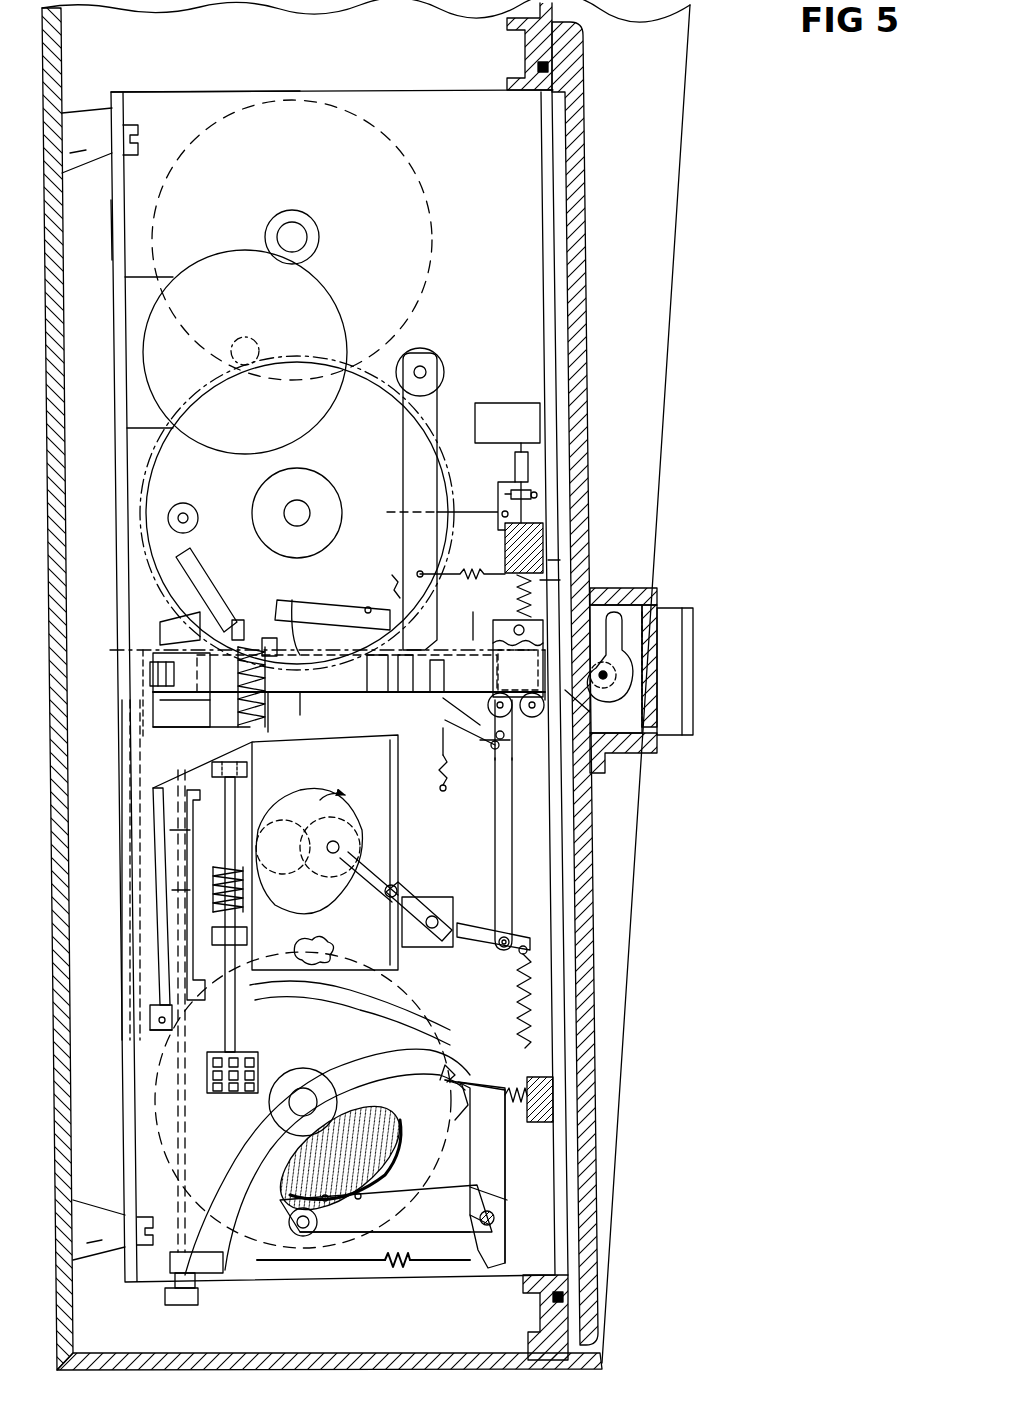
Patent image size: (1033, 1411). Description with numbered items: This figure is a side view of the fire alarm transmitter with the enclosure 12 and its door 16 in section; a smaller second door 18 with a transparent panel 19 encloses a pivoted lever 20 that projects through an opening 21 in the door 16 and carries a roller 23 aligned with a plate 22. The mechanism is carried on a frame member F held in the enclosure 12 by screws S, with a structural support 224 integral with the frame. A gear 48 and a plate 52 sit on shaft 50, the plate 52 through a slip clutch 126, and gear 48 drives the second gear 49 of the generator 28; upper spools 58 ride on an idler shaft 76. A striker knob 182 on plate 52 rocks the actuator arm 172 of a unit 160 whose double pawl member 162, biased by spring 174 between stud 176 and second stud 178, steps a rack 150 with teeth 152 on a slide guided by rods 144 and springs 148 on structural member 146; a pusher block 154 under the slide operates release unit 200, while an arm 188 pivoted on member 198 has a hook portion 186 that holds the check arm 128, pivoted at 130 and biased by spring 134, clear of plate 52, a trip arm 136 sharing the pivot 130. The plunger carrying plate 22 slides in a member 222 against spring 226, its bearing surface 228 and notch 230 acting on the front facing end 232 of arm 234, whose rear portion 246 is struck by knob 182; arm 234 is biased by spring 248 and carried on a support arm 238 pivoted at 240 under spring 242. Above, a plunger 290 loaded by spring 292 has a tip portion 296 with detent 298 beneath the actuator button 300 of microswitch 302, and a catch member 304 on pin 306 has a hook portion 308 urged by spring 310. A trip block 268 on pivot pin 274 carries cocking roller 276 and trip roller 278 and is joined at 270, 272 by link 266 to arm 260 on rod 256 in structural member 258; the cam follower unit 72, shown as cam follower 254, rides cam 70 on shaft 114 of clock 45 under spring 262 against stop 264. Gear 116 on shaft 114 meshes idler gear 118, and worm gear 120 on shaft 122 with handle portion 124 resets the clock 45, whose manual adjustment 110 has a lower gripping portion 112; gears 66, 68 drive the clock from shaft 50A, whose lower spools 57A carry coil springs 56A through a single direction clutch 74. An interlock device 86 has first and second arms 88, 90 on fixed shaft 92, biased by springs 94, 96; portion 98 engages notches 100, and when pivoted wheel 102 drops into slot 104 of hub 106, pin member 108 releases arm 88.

The enclosure 12 is at (686, 135).
The door 16 is at (586, 184).
The frame member F is at (112, 248).
The structural support 224 is at (148, 92).
The screws S is at (141, 128).
The upper spool 58 is at (420, 137).
The idler shaft 76 is at (298, 236).
The generator 28 is at (331, 272).
The second gear 49 is at (258, 340).
The gear 48 is at (150, 568).
The disk 52 is at (190, 588).
The slip clutch 126 is at (330, 500).
The shaft 50 is at (300, 500).
The striker knob 182 is at (190, 510).
The actuator arm 172 is at (193, 558).
The pivot 240 is at (423, 370).
The support arm 238 is at (441, 400).
The microswitch 302 is at (531, 432).
The actuator button 300 is at (515, 447).
The tip portion 296 is at (530, 463).
The detent 298 is at (532, 492).
The hook portion 308 is at (512, 485).
The catch member 304 is at (470, 510).
The spring 310 is at (538, 498).
The plunger 290 is at (545, 530).
The pin 306 is at (493, 516).
The spring 242 is at (472, 570).
The front facing end 232 is at (478, 612).
The notch 230 is at (493, 640).
The opening 21 is at (548, 640).
The bearing surface 228 is at (496, 706).
The plate 22 is at (620, 592).
The pivoted lever 20 is at (636, 612).
The roller 23 is at (606, 680).
The spring 226 is at (587, 702).
The second door 18 is at (690, 610).
The transparent panel 19 is at (645, 648).
The member 222 is at (558, 598).
The spring 292 is at (563, 580).
The hook portion 186 is at (150, 646).
The rack 150 is at (329, 688).
The unit 160 is at (160, 626).
The springs 148 is at (158, 672).
The rods 144 is at (160, 690).
The pusher block 154 is at (184, 724).
The biasing spring 174 is at (236, 712).
The stud 176 is at (238, 620).
The double pawl member 162 is at (268, 638).
The portion 246 is at (296, 600).
The arm 234 is at (367, 605).
The teeth 152 is at (330, 616).
The spring 248 is at (392, 572).
The pivot 130 is at (372, 694).
The check arm 128 is at (400, 696).
The trip arm 136 is at (440, 700).
The cocking roller 276 is at (452, 722).
The trip roller 278 is at (495, 728).
The pivot pin 274 is at (495, 742).
The spring 134 is at (430, 760).
The pivot connection 272 is at (452, 762).
The trip block 268 is at (514, 760).
The link 266 is at (506, 820).
The pivot connection 270 is at (506, 940).
The clock 45 is at (405, 810).
The cam 70 is at (395, 830).
The gear 116 is at (348, 800).
The shaft 114 is at (340, 847).
The cam follower 254 is at (352, 885).
The stop 264 is at (393, 888).
The cam follower unit 72 is at (455, 913).
The rod 256 is at (432, 915).
The structural member 258 is at (416, 935).
The arm 260 is at (480, 940).
The spring 262 is at (520, 1000).
The gear 68 is at (328, 950).
The unit 200 is at (280, 732).
The second stud 178 is at (248, 768).
The vertically slidable shaft 122 is at (237, 985).
The worm gear 120 is at (243, 897).
The idler gear 118 is at (245, 830).
The handle portion 124 is at (259, 1060).
The structural member 146 is at (138, 920).
The arm 188 is at (160, 975).
The member 198 is at (150, 1035).
The manual adjustment 110 is at (176, 1245).
The lower gripping portion 112 is at (170, 1302).
The shaft 50A is at (307, 1100).
The gear 66 is at (395, 1008).
The single direction clutch 74 is at (336, 1135).
The coil spring 56A is at (398, 1150).
The notches 100 is at (445, 1100).
The slot 104 is at (325, 1195).
The hub 106 is at (357, 1193).
The lower spool 57A is at (417, 1197).
The pivoted wheel 102 is at (305, 1236).
The second arm 90 is at (405, 1230).
The spring 96 is at (398, 1264).
The portion 98 is at (456, 1080).
The first arm 88 is at (500, 1150).
The pin member 108 is at (470, 1200).
The fixed shaft 92 is at (495, 1222).
The interlock device 86 is at (510, 1193).
The spring 94 is at (510, 1098).